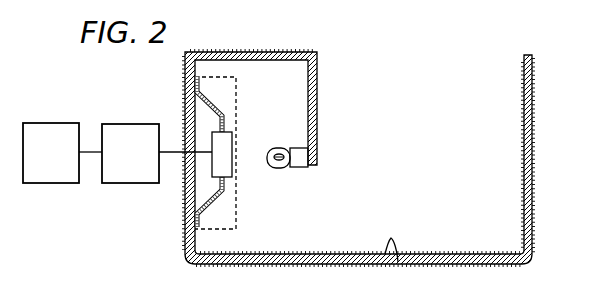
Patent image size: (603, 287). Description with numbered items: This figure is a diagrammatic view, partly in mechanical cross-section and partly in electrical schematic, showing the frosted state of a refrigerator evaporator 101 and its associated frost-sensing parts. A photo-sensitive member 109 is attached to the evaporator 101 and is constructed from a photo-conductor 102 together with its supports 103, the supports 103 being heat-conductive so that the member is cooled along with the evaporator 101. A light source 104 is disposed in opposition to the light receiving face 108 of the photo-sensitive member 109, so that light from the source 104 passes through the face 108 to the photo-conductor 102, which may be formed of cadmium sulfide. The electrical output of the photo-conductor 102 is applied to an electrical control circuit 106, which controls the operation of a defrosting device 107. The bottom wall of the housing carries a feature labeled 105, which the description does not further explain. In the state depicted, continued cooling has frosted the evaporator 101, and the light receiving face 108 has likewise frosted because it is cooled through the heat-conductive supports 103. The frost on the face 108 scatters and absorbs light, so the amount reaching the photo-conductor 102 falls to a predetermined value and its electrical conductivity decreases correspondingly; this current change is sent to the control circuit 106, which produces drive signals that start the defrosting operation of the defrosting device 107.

The evaporator 101 is at (529, 170).
The photo-conductor 102 is at (252, 158).
The supports 103 is at (221, 106).
The light source 104 is at (285, 168).
The aperture in bottom wall 105 is at (400, 238).
The electrical control circuit 106 is at (150, 167).
The defrosting device 107 is at (68, 167).
The light receiving face 108 is at (241, 146).
The photo-sensitive member 109 is at (231, 216).